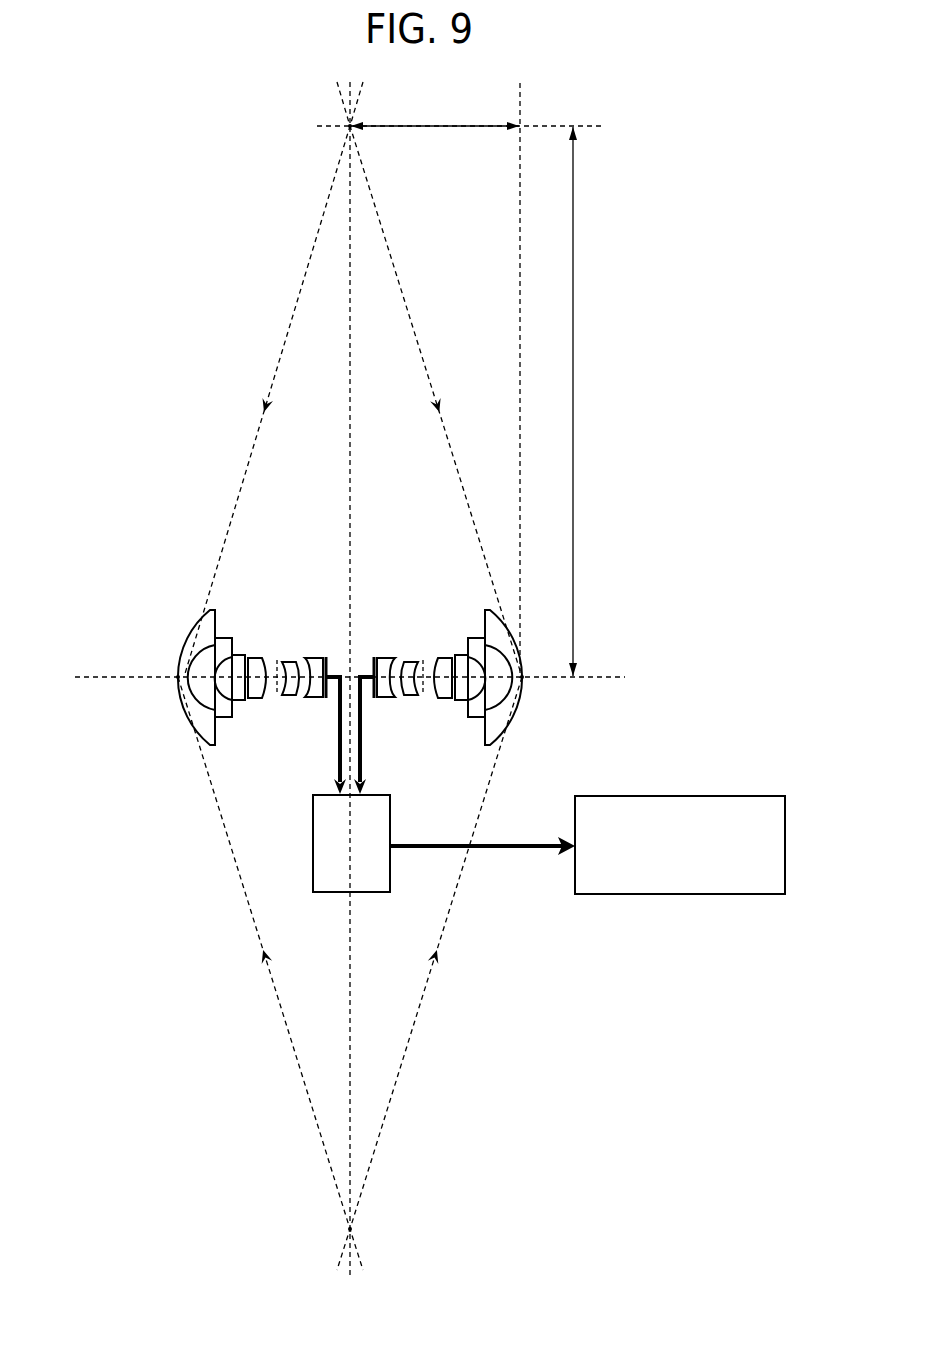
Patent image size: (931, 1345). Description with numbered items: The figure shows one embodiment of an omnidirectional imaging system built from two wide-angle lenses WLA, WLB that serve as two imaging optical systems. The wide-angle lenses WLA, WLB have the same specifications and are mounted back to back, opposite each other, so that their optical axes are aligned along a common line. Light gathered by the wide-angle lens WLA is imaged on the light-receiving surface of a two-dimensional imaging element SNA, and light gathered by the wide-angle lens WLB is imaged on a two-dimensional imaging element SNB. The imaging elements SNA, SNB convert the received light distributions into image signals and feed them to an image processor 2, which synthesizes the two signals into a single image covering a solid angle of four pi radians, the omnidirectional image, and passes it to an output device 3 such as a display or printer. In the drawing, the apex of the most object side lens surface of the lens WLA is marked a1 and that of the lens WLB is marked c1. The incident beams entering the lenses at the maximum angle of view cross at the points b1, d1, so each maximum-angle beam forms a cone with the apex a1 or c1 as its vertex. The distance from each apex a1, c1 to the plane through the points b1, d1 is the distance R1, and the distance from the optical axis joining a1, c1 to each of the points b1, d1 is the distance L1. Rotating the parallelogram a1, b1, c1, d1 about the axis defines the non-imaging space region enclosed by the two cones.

The image processor 2 is at (351, 843).
The output device 3 is at (587, 845).
The wide-angle lens WLA is at (434, 636).
The wide-angle lens WLB is at (266, 636).
The two-dimensional imaging element SNA is at (375, 700).
The two-dimensional imaging element SNB is at (325, 700).
The apex of the most object side lens surface of wide-angle lens WLA a1 is at (522, 678).
The crossing point of maximum angle of view light beams b1 is at (348, 125).
The apex of the most object side lens surface of wide-angle lens WLB c1 is at (178, 678).
The crossing point of maximum angle of view light beams d1 is at (353, 1229).
The distance R1 is at (435, 115).
The distance L1 is at (590, 401).